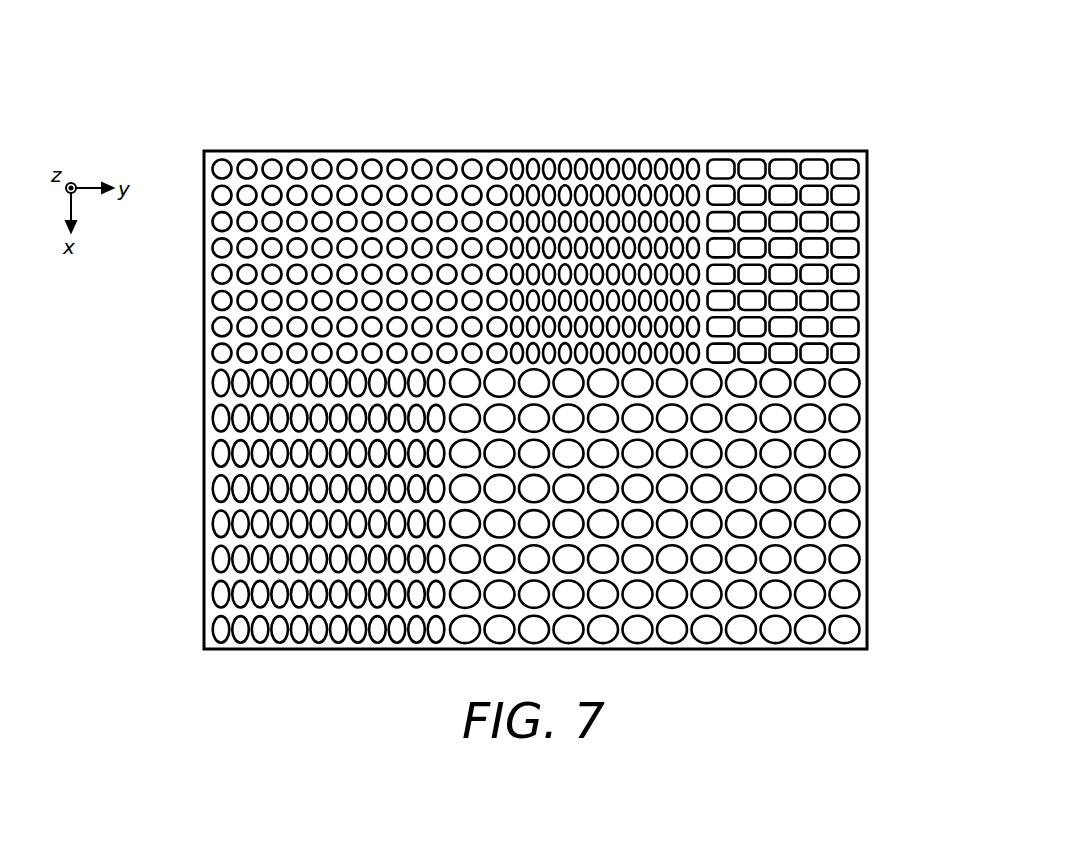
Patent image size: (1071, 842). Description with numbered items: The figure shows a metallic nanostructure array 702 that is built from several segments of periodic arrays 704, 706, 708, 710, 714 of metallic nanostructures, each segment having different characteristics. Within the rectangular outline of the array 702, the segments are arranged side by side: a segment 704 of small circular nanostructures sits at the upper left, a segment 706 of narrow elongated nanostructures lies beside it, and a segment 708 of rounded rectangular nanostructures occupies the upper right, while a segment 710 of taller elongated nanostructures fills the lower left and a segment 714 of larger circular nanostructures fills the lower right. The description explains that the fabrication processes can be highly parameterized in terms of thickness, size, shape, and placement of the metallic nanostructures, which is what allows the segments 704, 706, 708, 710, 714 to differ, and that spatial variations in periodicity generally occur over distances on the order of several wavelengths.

The metallic nanostructure array 702 is at (458, 85).
The segment of periodic array of metallic nanostructures 704 is at (272, 157).
The segment of periodic array of metallic nanostructures 706 is at (602, 160).
The segment of periodic array of metallic nanostructures 708 is at (792, 160).
The segment of periodic array of metallic nanostructures 710 is at (213, 485).
The segment of periodic array of metallic nanostructures 714 is at (860, 491).